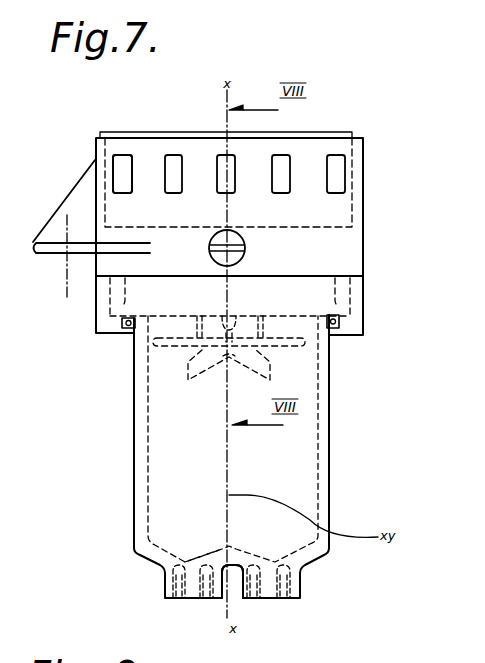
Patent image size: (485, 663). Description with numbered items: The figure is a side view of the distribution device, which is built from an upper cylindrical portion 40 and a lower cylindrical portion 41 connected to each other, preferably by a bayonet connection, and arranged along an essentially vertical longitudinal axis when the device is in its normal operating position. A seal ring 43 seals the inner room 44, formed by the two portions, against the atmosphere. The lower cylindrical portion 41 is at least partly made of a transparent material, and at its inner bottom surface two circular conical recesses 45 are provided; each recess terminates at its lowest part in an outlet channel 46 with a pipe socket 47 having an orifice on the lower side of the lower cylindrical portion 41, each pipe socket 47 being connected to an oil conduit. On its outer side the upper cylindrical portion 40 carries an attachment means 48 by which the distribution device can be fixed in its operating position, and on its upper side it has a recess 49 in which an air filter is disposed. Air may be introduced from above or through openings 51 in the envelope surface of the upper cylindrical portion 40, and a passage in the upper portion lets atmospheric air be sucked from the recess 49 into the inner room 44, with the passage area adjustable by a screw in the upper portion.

The upper cylindrical portion 40 is at (352, 248).
The lower cylindrical portion 41 is at (320, 403).
The seal ring 43 is at (128, 328).
The inner room 44 is at (208, 456).
The circular conical recesses 45 is at (253, 550).
The outlet channel 46 is at (273, 600).
The pipe socket 47 is at (178, 588).
The attachment means 48 is at (33, 254).
The recess 49 is at (308, 226).
The openings 51 is at (130, 175).